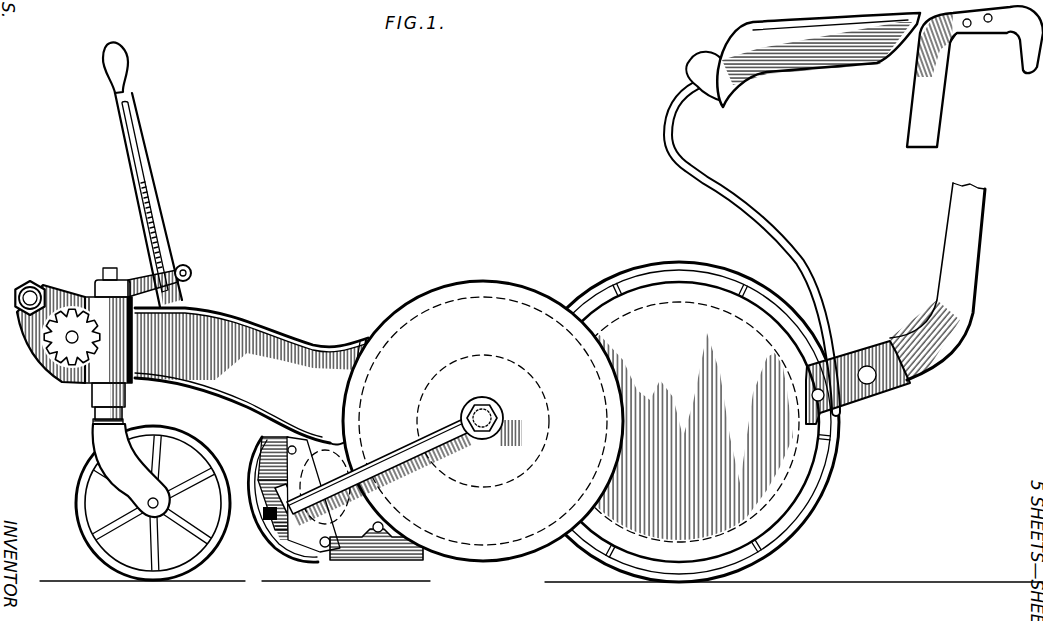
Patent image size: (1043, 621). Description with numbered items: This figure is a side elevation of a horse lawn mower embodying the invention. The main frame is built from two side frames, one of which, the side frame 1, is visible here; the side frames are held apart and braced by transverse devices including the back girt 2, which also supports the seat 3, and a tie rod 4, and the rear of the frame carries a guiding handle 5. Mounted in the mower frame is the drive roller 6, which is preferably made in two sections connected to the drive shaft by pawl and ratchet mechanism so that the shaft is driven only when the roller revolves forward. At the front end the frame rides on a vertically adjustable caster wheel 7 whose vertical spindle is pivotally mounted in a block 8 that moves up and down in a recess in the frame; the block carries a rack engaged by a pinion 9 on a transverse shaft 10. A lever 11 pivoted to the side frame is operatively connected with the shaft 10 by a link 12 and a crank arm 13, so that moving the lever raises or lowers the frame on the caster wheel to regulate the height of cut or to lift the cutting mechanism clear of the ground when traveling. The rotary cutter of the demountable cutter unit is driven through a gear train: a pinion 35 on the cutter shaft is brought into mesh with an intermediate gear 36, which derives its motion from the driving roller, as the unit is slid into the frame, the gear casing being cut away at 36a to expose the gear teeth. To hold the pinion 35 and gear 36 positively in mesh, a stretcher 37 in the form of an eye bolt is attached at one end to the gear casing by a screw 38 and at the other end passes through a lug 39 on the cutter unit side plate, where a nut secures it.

The side frame 1 is at (259, 318).
The back girt 2 is at (752, 232).
The seat 3 is at (830, 58).
The tie rod 4 is at (31, 292).
The guiding handle 5 is at (1012, 37).
The carrying wheel 6 is at (670, 262).
The caster wheel 7 is at (88, 544).
The block 8 is at (92, 400).
The pinion 9 is at (53, 364).
The transverse shaft 10 is at (66, 337).
The lever 11 is at (151, 173).
The link 12 is at (140, 278).
The crank arm 13 is at (895, 303).
The pinion 35 is at (260, 444).
The intermediate gear 36 is at (486, 538).
The cut-away portion of gear casing 36a is at (356, 530).
The stretcher 37 is at (392, 452).
The screw 38 is at (491, 409).
The lug 39 is at (296, 530).